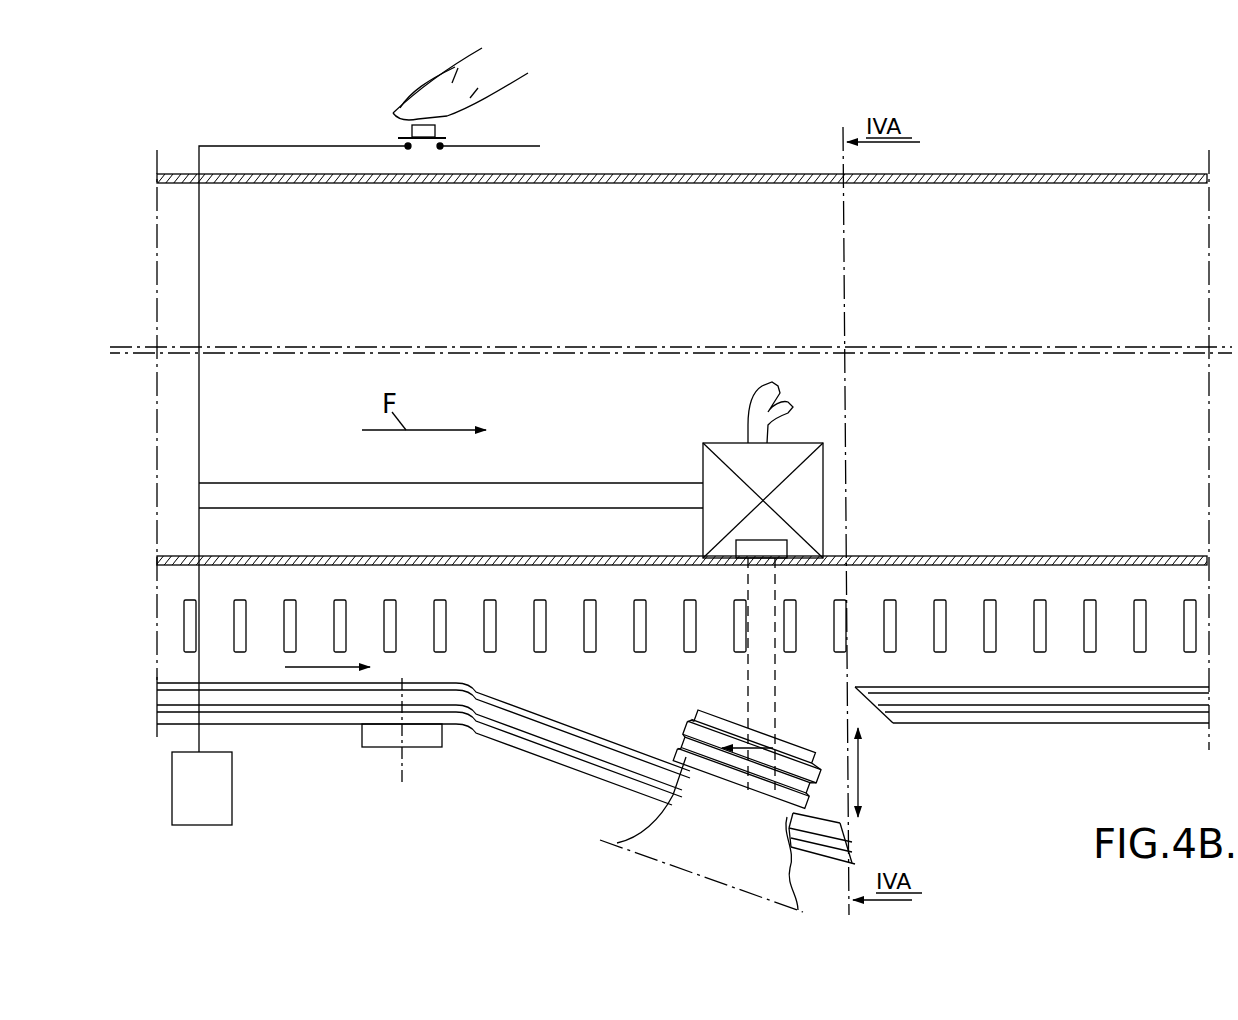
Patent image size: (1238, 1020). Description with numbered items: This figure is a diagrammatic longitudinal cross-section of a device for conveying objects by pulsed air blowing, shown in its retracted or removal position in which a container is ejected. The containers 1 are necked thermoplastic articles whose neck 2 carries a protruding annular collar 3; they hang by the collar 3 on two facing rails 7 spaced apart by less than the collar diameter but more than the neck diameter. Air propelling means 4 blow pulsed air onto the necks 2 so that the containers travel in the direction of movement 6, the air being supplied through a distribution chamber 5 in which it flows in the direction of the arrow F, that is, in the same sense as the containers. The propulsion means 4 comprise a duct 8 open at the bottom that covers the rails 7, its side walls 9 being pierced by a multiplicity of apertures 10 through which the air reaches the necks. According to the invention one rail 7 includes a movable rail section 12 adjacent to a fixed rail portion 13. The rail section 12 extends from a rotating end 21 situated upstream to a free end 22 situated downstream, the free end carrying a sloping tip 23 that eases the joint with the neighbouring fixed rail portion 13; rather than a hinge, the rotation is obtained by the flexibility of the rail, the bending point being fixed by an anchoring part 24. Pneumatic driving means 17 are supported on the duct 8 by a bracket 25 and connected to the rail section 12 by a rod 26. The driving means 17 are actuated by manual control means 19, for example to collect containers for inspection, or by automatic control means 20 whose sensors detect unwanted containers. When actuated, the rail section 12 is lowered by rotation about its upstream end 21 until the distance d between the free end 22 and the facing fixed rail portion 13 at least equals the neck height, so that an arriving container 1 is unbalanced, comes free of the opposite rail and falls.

The container 1 is at (634, 818).
The neck 2 is at (800, 784).
The collar 3 is at (717, 778).
The means of propelling air 4 is at (895, 553).
The distribution chamber 5 is at (1056, 412).
The direction of movement 6 is at (328, 668).
The rail 7 is at (1048, 694).
The duct 8 is at (928, 563).
The side wall 9 is at (1110, 592).
The apertures 10 is at (938, 602).
The movable rail section 12 is at (637, 760).
The fixed rail portion 13 is at (385, 700).
The driving means 17 is at (728, 447).
The manual control means 19 is at (460, 112).
The automatic control means 20 is at (219, 802).
The rotating end 21 is at (465, 703).
The free end 22 is at (825, 832).
The sloping tip 23 is at (852, 853).
The anchoring part 24 is at (390, 737).
The bracket 25 is at (755, 544).
The rod 26 is at (762, 677).